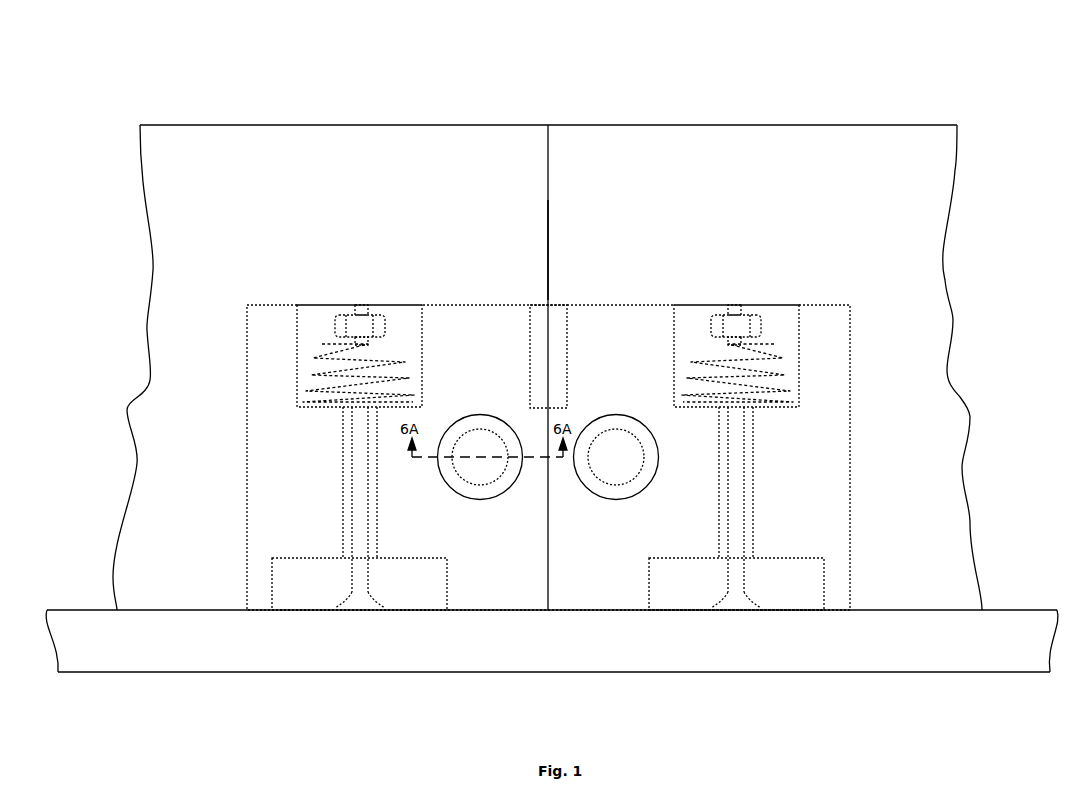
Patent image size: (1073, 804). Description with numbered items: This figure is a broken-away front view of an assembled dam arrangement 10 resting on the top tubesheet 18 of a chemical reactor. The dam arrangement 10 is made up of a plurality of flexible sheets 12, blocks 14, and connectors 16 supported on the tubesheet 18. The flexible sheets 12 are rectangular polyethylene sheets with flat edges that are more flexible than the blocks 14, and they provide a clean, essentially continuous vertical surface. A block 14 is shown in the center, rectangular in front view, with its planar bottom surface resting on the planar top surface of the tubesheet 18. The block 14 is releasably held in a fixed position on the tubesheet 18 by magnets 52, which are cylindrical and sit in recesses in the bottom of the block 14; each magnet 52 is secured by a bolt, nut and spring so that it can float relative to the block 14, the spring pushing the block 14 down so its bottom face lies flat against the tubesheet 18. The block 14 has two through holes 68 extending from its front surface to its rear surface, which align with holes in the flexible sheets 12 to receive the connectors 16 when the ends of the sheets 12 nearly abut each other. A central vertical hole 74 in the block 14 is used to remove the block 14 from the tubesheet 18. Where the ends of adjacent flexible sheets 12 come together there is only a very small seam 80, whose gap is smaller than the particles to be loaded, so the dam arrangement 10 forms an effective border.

The dam arrangement 10 is at (705, 95).
The flexible sheet 12 is at (268, 157).
The block 14 is at (622, 300).
The connector 16 is at (460, 497).
The top tubesheet 18 is at (288, 658).
The magnet 52 is at (321, 594).
The through hole 68 is at (505, 495).
The central vertical hole 74 is at (535, 300).
The seam 80 is at (548, 243).